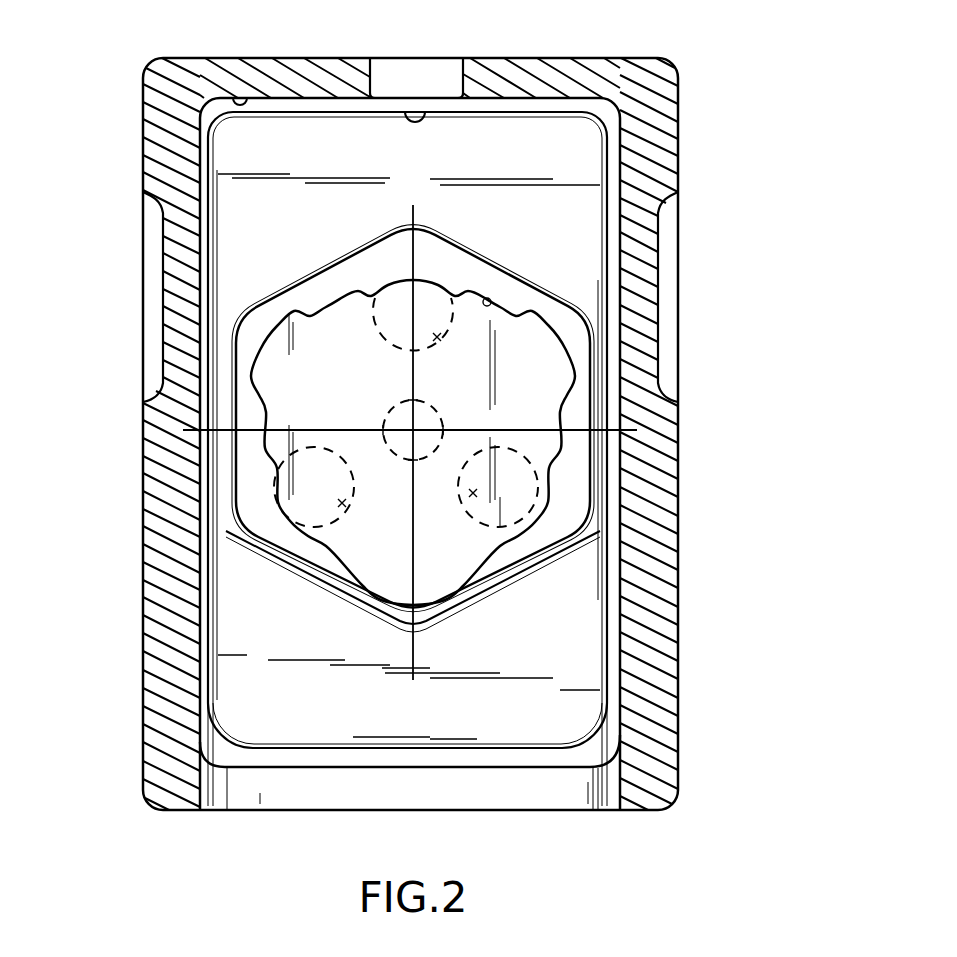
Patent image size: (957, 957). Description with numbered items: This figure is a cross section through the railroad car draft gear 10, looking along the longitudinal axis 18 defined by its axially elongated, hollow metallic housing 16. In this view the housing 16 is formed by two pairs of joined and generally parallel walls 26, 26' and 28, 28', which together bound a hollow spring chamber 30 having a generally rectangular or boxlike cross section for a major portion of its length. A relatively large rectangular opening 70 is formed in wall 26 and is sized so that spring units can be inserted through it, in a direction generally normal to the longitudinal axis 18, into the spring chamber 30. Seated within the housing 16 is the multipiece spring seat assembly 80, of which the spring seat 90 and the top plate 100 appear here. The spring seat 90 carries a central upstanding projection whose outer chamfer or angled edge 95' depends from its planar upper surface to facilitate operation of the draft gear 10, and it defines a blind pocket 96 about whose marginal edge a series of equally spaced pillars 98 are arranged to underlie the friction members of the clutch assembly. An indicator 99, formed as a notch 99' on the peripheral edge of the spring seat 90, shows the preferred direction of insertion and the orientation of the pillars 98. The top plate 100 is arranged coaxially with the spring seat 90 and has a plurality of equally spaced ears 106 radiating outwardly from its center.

The railroad car draft gear 10 is at (742, 114).
The housing 16 is at (165, 663).
The longitudinal axis 18 is at (393, 416).
The wall 26 is at (410, 805).
The wall 26' is at (491, 55).
The wall 28 is at (130, 397).
The wall 28' is at (695, 347).
The spring chamber 30 is at (240, 96).
The rectangular opening 70 is at (617, 790).
The multipiece spring seat assembly 80 is at (572, 309).
The spring seat 90 is at (582, 645).
The chamfer 95' is at (413, 589).
The pocket 96 is at (490, 298).
The pillars 98 is at (358, 512).
The indicator 99 is at (390, 139).
The notch 99' is at (432, 60).
The top plate 100 is at (327, 332).
The ears 106 is at (265, 366).